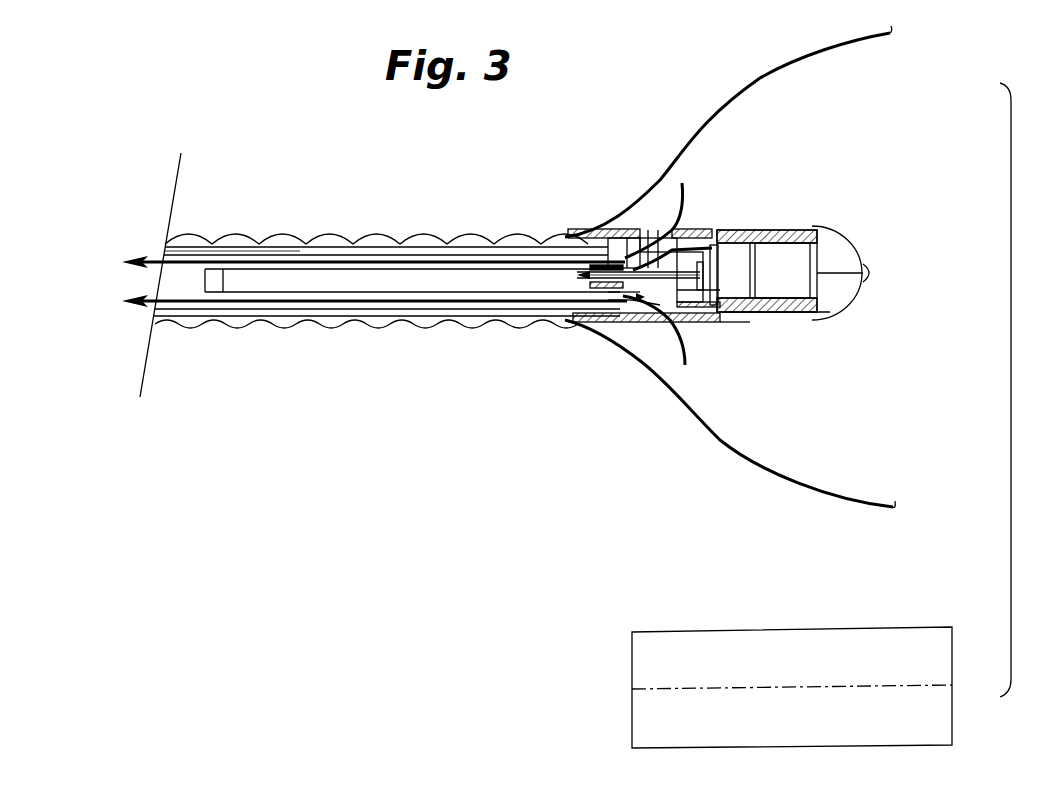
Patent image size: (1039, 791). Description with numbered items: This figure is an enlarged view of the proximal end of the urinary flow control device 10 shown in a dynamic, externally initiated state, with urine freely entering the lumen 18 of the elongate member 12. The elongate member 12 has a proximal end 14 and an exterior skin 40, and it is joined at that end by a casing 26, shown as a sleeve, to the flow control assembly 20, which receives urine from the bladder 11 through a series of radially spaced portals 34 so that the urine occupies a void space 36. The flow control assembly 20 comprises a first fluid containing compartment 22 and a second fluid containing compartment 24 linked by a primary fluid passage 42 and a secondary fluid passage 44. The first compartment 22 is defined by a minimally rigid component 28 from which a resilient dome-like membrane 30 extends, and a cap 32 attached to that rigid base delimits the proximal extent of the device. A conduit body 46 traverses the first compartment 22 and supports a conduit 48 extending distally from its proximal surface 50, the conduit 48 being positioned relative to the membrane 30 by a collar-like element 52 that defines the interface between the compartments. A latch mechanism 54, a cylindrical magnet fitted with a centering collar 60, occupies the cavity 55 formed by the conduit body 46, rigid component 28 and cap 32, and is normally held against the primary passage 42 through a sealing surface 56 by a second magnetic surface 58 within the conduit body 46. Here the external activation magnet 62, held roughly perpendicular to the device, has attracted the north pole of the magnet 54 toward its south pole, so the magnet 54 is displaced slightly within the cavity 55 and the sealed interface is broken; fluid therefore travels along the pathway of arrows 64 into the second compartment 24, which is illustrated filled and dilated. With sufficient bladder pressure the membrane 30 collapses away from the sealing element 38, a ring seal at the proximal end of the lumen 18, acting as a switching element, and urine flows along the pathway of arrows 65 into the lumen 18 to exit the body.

The urinary flow control device 10 is at (338, 195).
The bladder 11 is at (763, 70).
The elongate member 12 is at (336, 227).
The proximal end 14 is at (543, 225).
The lumen 18 is at (197, 258).
The flow control assembly 20 is at (820, 335).
The first fluid containing compartment 22 is at (678, 233).
The second fluid containing compartment 24 is at (307, 285).
The casing 26 is at (577, 320).
The minimally rigid component 28 is at (823, 323).
The resilient dome-like membrane 30 is at (612, 300).
The cap 32 is at (857, 287).
The radially spaced portals 34 is at (658, 237).
The void space 36 is at (648, 237).
The sealing element 38 is at (628, 233).
The exterior surface or skin 40 is at (390, 230).
The primary fluid passage 42 is at (662, 320).
The secondary fluid passage 44 is at (597, 267).
The conduit body 46 is at (717, 320).
The conduit 48 is at (643, 307).
The proximal surface 50 is at (765, 233).
The collar-like element 52 is at (573, 283).
The latch mechanism 54 is at (850, 250).
The cavity 55 is at (817, 305).
The sealing surface 56 is at (817, 238).
The second magnetic surface 58 is at (753, 237).
The centering collar 60 is at (753, 320).
The external activation magnet 62 is at (955, 647).
The arrows 64 is at (577, 277).
The arrows 65 is at (122, 265).